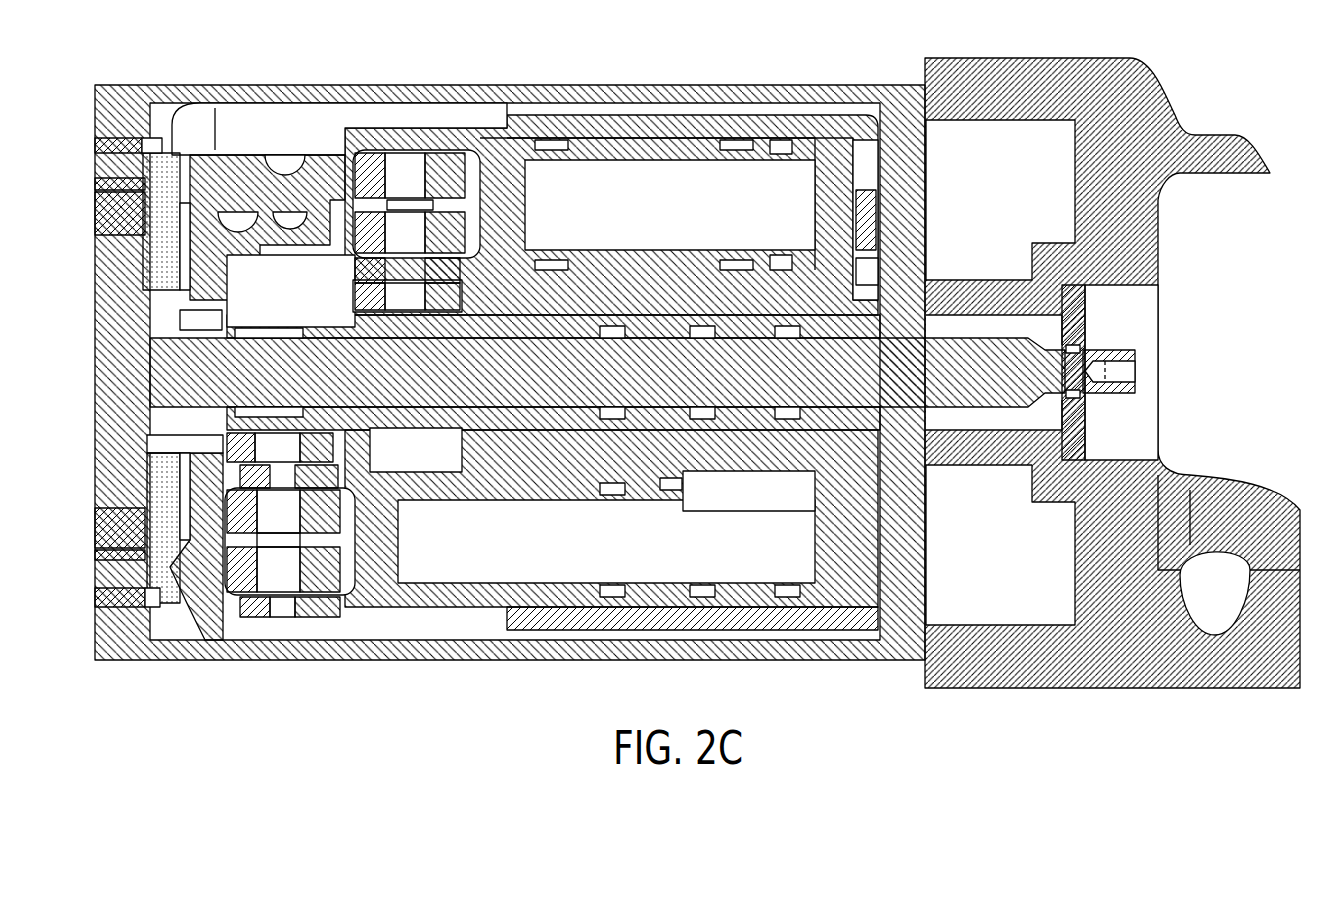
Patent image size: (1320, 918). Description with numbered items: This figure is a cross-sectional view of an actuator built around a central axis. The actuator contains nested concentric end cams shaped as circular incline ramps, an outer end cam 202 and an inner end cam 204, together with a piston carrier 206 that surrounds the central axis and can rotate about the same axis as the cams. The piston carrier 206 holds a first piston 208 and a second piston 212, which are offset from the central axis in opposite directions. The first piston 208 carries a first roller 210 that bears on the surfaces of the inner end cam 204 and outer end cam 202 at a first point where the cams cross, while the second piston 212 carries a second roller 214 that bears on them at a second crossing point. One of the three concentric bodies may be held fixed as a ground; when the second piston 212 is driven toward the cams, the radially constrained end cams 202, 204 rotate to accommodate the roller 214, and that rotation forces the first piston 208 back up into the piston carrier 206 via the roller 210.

The outer end cam 202 is at (178, 150).
The inner end cam 204 is at (262, 213).
The piston carrier 206 is at (682, 122).
The first piston 208 is at (615, 198).
The first roller 210 is at (370, 170).
The second piston 212 is at (528, 536).
The second roller 214 is at (322, 582).